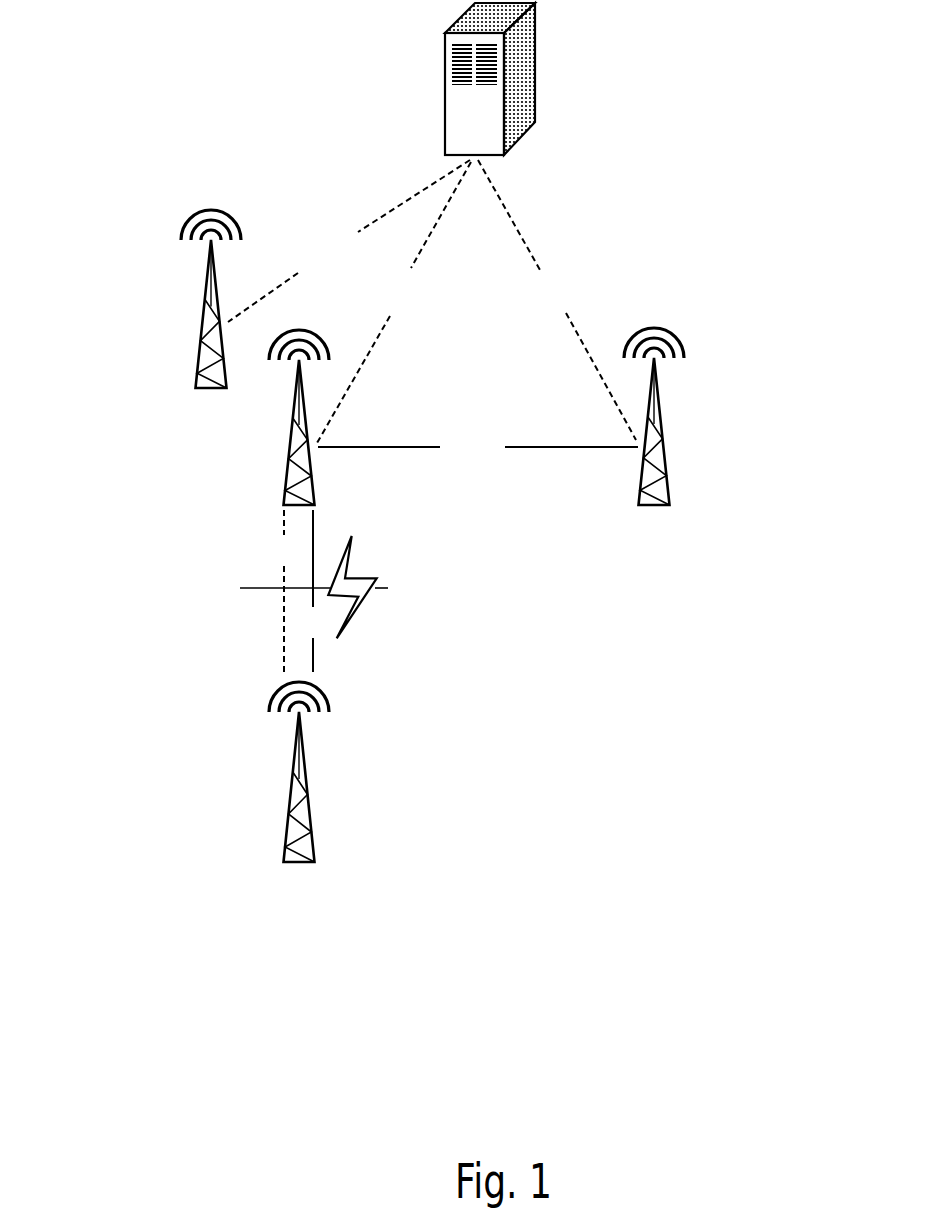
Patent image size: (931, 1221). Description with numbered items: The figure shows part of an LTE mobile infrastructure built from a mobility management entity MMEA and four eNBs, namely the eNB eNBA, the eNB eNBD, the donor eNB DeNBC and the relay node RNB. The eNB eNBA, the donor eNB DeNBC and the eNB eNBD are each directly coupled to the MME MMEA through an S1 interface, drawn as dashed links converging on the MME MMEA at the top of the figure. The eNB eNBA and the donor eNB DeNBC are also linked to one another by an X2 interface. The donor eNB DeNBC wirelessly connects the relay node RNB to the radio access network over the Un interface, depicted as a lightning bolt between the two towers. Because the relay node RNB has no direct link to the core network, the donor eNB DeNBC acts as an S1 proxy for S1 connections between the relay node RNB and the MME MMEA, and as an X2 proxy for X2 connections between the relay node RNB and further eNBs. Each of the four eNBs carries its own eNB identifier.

The MME MMEA is at (535, 122).
The eNB eNBD is at (196, 386).
The DeNB DeNBC is at (284, 505).
The eNB eNBA is at (670, 504).
The RN RNB is at (284, 861).
The S1 interface S1 is at (432, 416).
The X2 interface X2 is at (471, 555).
The Un interface Un is at (327, 587).